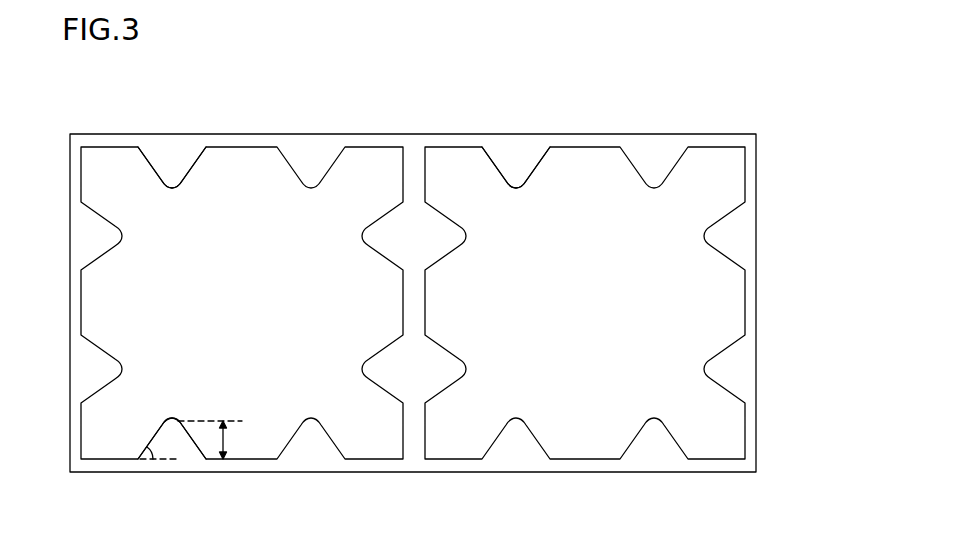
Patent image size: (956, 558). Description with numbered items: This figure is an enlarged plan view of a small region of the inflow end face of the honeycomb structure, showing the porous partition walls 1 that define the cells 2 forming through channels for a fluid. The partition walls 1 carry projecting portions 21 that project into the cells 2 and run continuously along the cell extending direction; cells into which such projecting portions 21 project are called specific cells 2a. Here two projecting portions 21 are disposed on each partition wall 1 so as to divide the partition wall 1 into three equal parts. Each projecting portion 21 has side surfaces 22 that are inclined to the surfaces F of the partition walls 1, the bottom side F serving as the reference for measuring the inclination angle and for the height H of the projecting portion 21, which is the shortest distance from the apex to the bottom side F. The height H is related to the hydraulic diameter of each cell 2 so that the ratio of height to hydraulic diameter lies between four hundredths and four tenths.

The partition wall 1 is at (418, 172).
The cell 2 is at (646, 290).
The specific cell 2a is at (705, 182).
The projecting portion 21 is at (178, 160).
The side surface 22 is at (153, 446).
The height of projecting portion H is at (216, 440).
The bottom side F is at (160, 461).